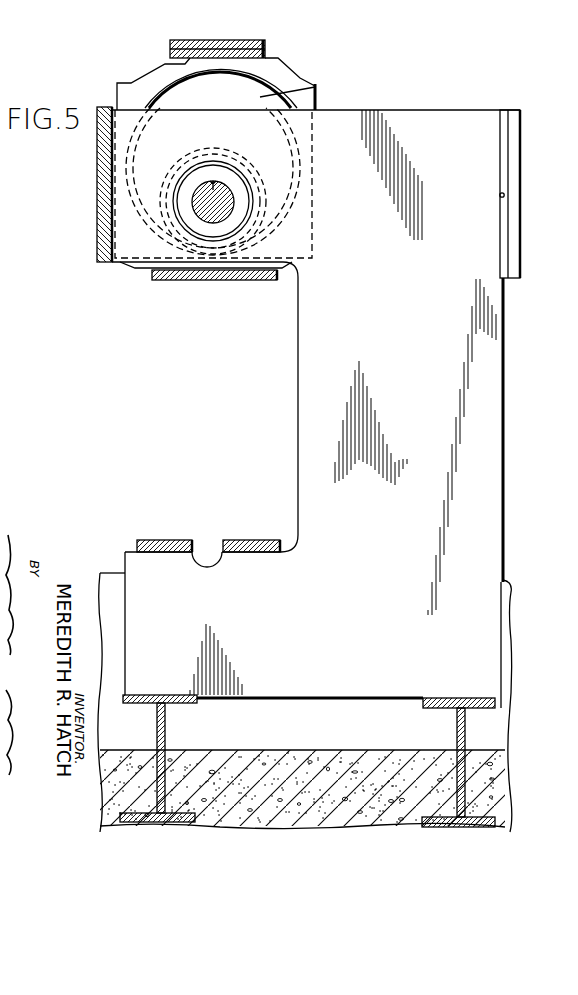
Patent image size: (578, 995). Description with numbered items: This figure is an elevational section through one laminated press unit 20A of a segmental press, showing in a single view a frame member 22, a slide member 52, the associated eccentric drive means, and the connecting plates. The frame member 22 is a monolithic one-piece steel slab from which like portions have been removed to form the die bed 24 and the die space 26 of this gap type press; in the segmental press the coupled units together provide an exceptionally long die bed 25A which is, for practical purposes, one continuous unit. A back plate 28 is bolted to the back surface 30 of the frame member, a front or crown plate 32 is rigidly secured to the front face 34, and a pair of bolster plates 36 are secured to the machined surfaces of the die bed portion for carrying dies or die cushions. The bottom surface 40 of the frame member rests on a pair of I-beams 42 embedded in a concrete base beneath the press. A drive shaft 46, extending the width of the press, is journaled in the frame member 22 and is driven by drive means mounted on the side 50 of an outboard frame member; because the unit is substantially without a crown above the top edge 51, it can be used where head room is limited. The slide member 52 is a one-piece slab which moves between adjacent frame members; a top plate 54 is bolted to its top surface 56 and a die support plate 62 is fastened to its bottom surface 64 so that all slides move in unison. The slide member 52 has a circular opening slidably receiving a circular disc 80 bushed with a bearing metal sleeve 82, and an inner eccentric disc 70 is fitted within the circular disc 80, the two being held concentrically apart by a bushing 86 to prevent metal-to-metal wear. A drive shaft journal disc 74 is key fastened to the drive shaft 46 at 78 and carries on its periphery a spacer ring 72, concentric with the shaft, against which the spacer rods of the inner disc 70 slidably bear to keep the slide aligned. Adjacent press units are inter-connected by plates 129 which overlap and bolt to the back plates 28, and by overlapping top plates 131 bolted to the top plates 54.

The laminated press unit 20A is at (92, 232).
The frame member 22 is at (291, 379).
The die bed 24 is at (135, 567).
The die bed 25A is at (182, 553).
The die space 26 is at (223, 447).
The back plate 28 is at (506, 135).
The plate 129 is at (516, 166).
The back surface 30 is at (499, 194).
The front or crown plate 32 is at (100, 148).
The front face 34 is at (110, 185).
The bolster plate 36 is at (143, 540).
The bottom surface 40 is at (460, 697).
The I-beam 42 is at (165, 727).
The drive shaft 46 is at (225, 213).
The side 50 is at (326, 328).
The top edge 51 is at (405, 108).
The slide member 52 is at (283, 71).
The top plate 54 is at (170, 50).
The top surface 56 is at (148, 72).
The die support plate 62 is at (168, 281).
The bottom surface 64 is at (246, 281).
The inner eccentric disc 70 is at (258, 163).
The spacer ring or bushing 72 is at (252, 190).
The drive shaft journal disc 74 is at (189, 215).
The key fastening 78 is at (213, 181).
The circular disc 80 is at (317, 86).
The bearing metal insert or sleeve 82 is at (183, 83).
The bushing 86 is at (240, 148).
The overlapping top plate 131 is at (268, 48).